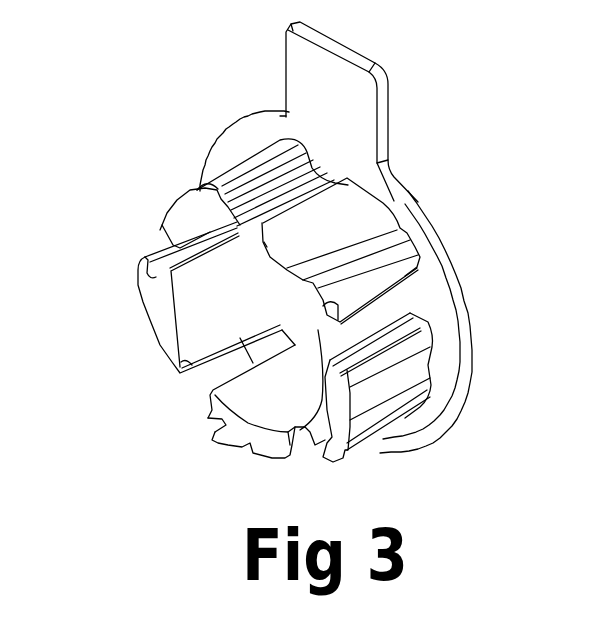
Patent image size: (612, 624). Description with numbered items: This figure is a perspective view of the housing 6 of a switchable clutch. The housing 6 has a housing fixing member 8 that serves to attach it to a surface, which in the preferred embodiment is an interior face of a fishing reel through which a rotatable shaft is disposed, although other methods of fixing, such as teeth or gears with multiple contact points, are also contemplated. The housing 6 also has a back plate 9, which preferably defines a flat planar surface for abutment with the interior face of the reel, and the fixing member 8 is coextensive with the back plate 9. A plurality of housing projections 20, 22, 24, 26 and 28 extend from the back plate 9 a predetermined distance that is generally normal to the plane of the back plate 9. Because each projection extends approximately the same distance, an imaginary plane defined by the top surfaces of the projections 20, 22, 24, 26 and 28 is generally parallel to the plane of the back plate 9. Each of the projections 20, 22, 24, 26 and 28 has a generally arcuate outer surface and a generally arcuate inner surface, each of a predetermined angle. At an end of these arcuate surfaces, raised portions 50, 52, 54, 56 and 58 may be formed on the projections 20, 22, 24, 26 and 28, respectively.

The housing 6 is at (470, 255).
The housing fixing member 8 is at (390, 97).
The back plate 9 is at (460, 323).
The housing projection 20 is at (348, 230).
The housing projection 22 is at (397, 373).
The housing projection 24 is at (247, 433).
The housing projection 26 is at (167, 317).
The housing projection 28 is at (197, 217).
The raised portion 50 is at (383, 273).
The raised portion 52 is at (375, 448).
The raised portion 54 is at (210, 437).
The raised portion 56 is at (137, 272).
The raised portion 58 is at (208, 188).